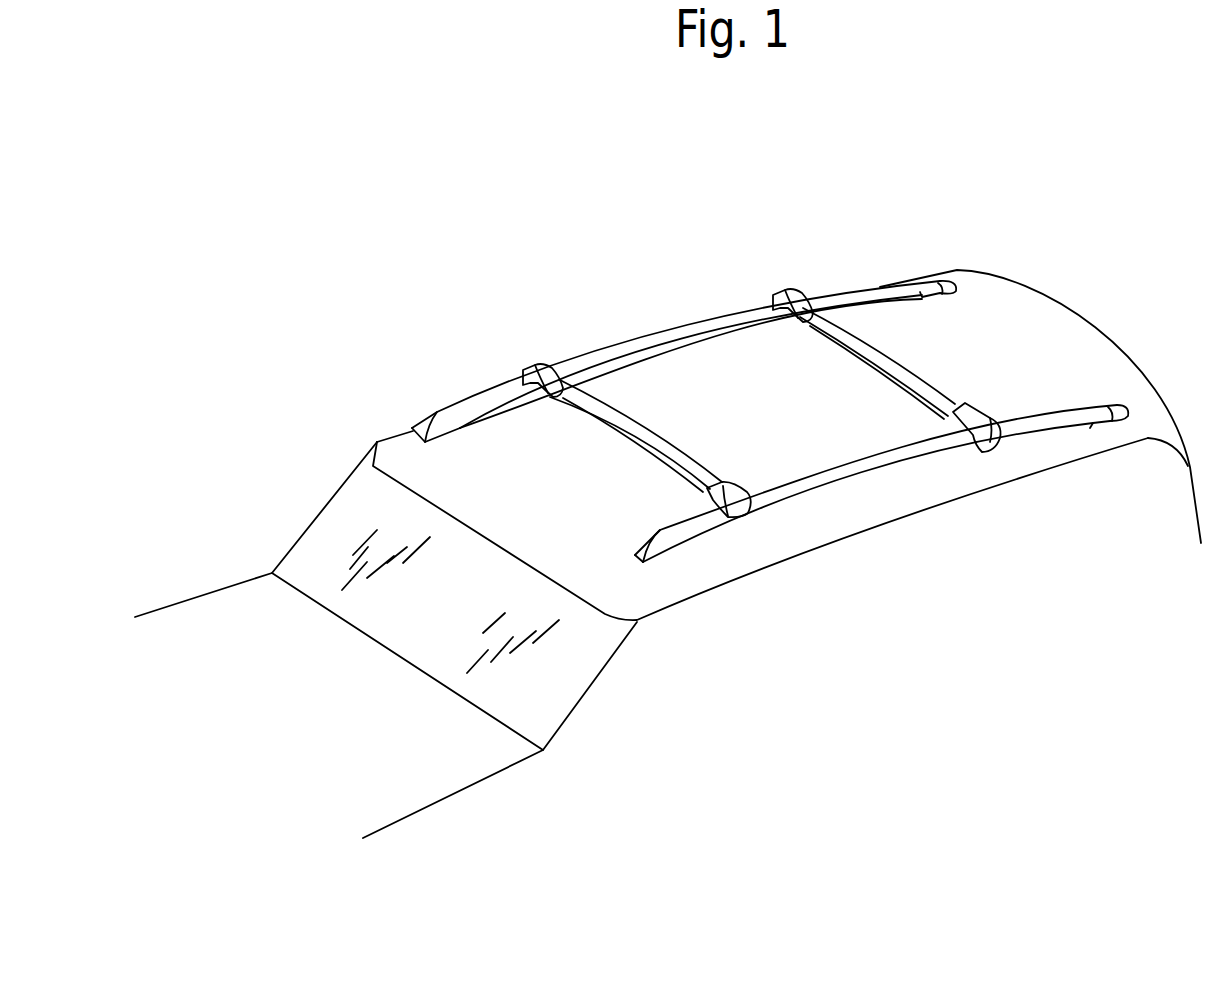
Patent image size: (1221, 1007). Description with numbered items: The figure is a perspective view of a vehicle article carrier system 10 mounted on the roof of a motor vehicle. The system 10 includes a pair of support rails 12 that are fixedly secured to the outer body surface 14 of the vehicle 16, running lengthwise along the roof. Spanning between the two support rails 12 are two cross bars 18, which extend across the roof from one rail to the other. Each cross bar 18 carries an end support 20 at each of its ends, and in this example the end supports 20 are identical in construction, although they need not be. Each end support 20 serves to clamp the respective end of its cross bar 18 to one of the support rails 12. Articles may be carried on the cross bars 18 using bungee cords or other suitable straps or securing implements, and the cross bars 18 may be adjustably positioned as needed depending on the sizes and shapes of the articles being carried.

The vehicle article carrier system 10 is at (665, 243).
The support rail 12 is at (641, 343).
The outer body surface 14 is at (503, 505).
The vehicle 16 is at (272, 531).
The cross bar 18 is at (833, 345).
The end support 20 is at (536, 367).